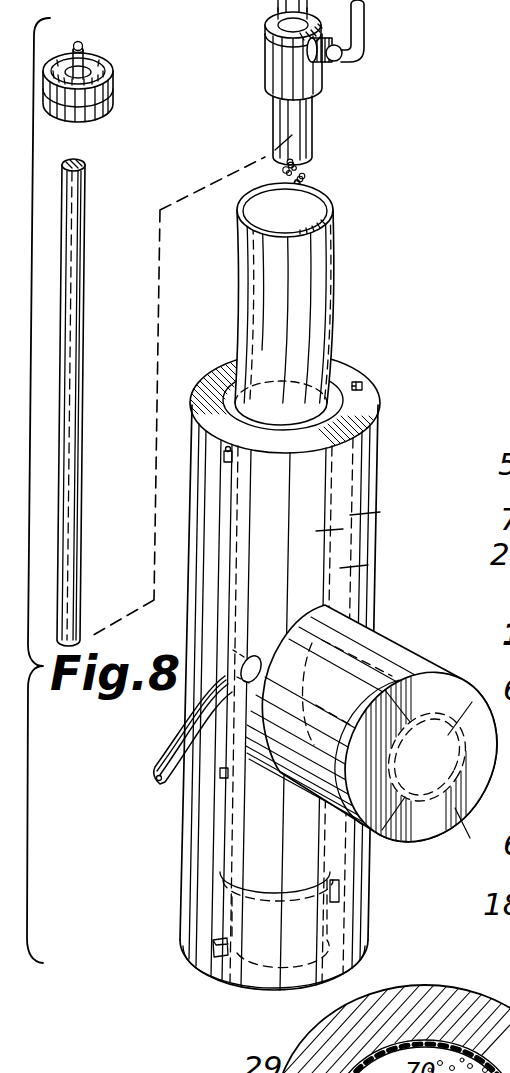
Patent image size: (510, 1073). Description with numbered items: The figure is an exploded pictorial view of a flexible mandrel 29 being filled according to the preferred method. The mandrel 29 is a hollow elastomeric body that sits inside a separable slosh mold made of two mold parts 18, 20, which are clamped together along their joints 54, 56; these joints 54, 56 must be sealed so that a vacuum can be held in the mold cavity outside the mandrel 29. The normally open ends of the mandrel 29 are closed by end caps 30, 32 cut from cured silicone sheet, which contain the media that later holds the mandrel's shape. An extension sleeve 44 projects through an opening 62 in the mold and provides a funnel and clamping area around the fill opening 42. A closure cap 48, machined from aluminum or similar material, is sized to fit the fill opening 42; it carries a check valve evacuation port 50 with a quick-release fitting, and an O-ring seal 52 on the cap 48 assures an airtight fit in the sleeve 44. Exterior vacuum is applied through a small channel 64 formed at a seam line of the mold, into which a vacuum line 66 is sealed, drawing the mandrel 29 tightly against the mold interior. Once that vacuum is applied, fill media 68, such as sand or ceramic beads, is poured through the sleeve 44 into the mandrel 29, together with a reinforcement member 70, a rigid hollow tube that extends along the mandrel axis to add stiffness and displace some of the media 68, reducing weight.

The mold part 18 is at (190, 847).
The mold part 20 is at (362, 462).
The flexible mandrel 29 is at (383, 510).
The end cap 30 is at (418, 823).
The end cap 32 is at (230, 980).
The fill opening 42 is at (343, 197).
The extension sleeve 44 is at (316, 286).
The closure cap 48 is at (84, 47).
The check valve evacuation port 50 is at (113, 90).
The O-ring seal 52 is at (96, 115).
The joint 54 is at (210, 895).
The joint 56 is at (352, 565).
The opening 62 is at (222, 377).
The channel 64 is at (254, 652).
The vacuum line 66 is at (173, 777).
The fill media 68 is at (304, 175).
The reinforcement member 70 is at (86, 211).